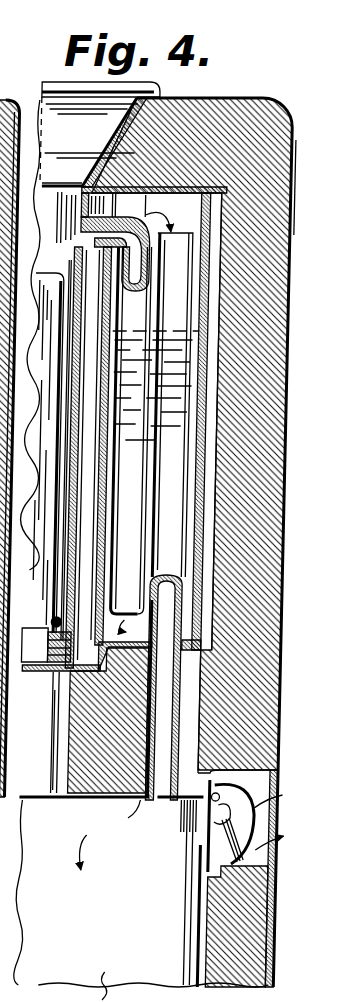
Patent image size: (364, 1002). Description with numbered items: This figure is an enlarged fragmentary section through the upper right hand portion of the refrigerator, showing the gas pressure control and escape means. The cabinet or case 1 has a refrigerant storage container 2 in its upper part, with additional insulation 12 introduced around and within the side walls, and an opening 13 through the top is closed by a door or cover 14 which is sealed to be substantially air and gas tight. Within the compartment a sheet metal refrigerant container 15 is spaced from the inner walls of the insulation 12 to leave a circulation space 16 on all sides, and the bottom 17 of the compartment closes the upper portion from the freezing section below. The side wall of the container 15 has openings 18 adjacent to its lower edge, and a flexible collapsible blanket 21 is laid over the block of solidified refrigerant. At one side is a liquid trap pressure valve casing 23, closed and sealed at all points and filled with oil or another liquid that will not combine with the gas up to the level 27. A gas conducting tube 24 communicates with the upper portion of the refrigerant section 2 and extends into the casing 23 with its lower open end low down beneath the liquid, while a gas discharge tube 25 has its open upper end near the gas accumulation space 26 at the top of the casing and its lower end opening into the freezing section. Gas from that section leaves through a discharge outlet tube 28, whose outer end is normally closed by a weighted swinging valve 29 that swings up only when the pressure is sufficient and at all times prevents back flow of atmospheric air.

The cabinet or case 1 is at (246, 942).
The refrigerant storage container 2 is at (92, 238).
The insulation 12 is at (104, 790).
The opening 13 is at (188, 98).
The door or cover 14 is at (150, 92).
The refrigerant container 15 is at (82, 550).
The circulation space 16 is at (112, 383).
The bottom 17 is at (34, 732).
The openings 18 is at (46, 645).
The blanket 21 is at (60, 464).
The liquid trap pressure valve casing 23 is at (206, 382).
The gas conducting tube 24 is at (146, 413).
The gas discharge tube 25 is at (182, 296).
The gas accumulation space 26 is at (190, 219).
The liquid level 27 is at (152, 342).
The discharge outlet tube 28 is at (200, 856).
The weighted swinging valve 29 is at (226, 810).